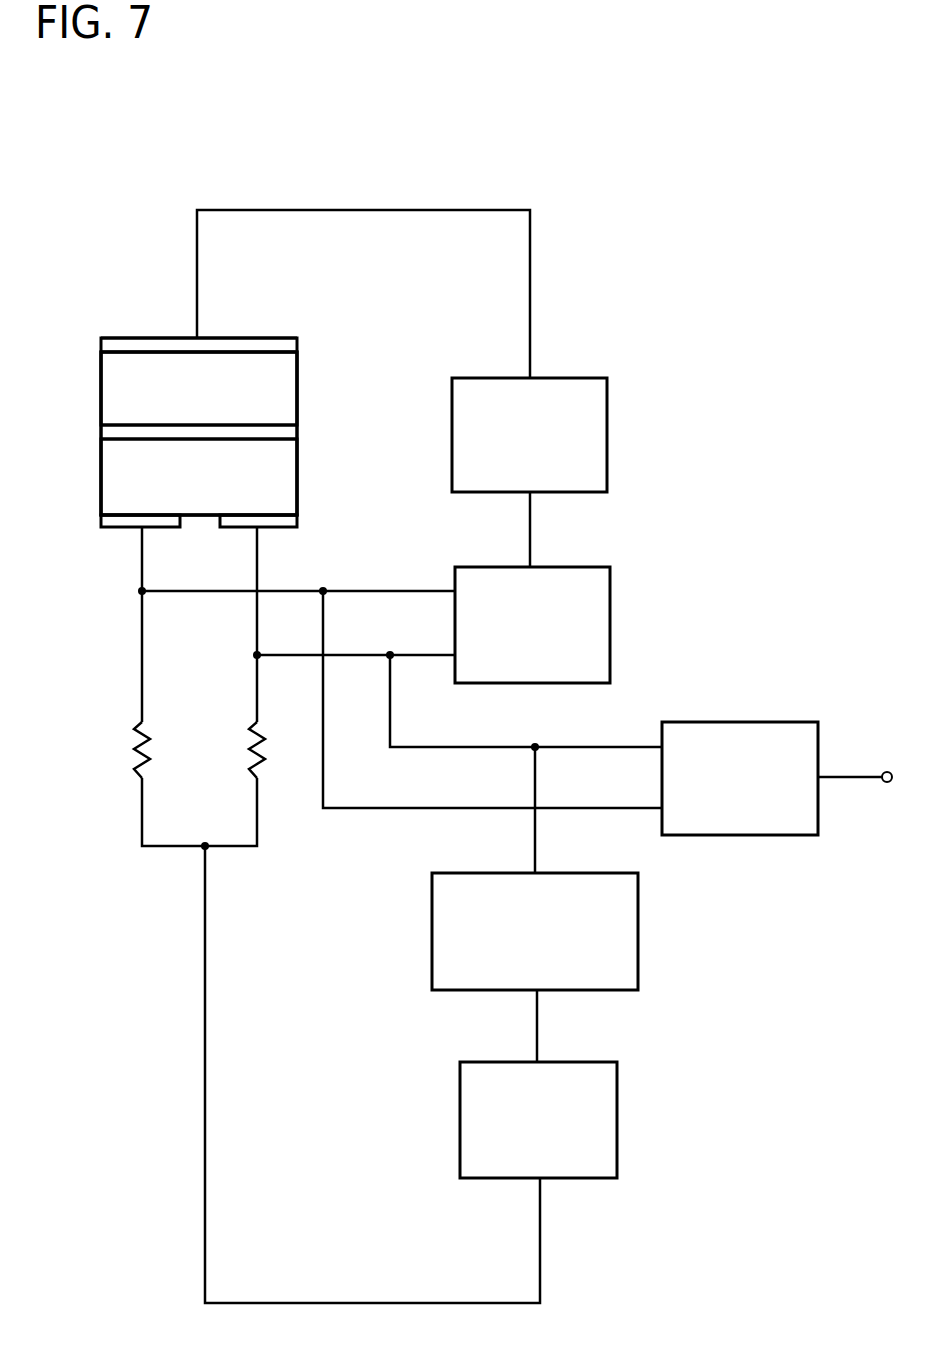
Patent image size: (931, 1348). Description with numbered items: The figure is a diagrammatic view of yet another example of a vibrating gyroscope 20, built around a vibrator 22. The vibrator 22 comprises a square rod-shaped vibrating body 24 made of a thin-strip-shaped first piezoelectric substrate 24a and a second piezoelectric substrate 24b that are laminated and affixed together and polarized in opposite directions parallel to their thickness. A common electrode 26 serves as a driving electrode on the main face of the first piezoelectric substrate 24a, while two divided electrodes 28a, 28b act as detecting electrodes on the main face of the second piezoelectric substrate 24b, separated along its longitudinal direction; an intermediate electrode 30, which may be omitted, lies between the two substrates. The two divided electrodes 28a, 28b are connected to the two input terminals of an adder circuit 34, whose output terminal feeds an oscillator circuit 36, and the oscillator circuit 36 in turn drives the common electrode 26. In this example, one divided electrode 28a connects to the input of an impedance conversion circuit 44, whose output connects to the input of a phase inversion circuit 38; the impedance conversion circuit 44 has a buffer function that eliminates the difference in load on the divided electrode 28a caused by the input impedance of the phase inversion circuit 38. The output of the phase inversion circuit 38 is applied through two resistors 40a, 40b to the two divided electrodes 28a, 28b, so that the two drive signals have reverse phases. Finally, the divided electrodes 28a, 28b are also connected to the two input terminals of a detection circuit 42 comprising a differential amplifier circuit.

The vibrating gyroscope 20 is at (692, 132).
The vibrator 22 is at (122, 330).
The vibrating body 24 is at (297, 368).
The first piezoelectric substrate 24a is at (280, 398).
The second piezoelectric substrate 24b is at (280, 485).
The common electrode 26 is at (258, 338).
The divided electrode 28a is at (287, 525).
The divided electrode 28b is at (123, 523).
The intermediate electrode 30 is at (287, 432).
The adder circuit 34 is at (585, 632).
The oscillator circuit 36 is at (607, 437).
The phase inversion circuit 38 is at (617, 1120).
The resistor 40a is at (267, 765).
The resistor 40b is at (142, 773).
The detection circuit 42 is at (787, 835).
The impedance conversion circuit 44 is at (638, 945).